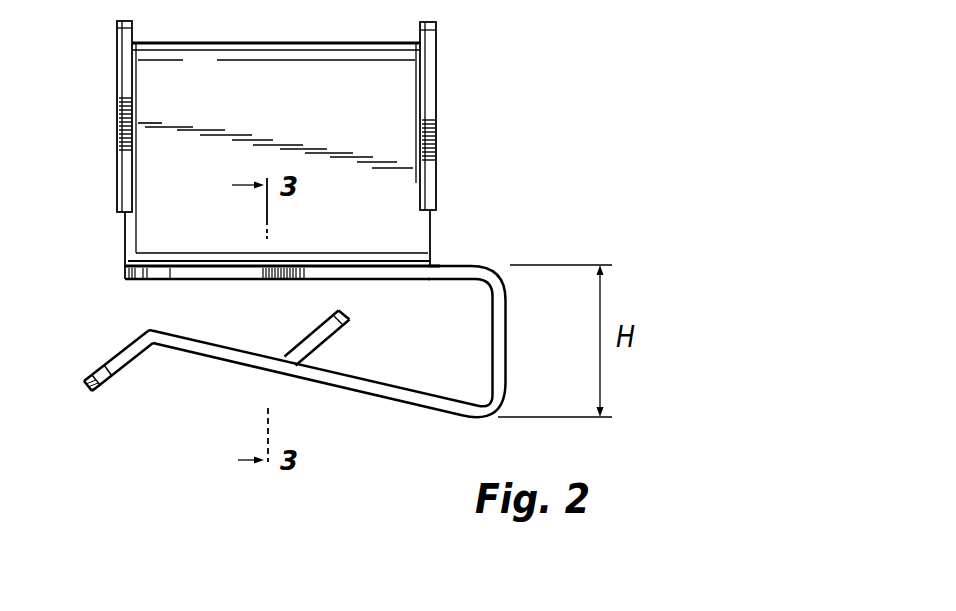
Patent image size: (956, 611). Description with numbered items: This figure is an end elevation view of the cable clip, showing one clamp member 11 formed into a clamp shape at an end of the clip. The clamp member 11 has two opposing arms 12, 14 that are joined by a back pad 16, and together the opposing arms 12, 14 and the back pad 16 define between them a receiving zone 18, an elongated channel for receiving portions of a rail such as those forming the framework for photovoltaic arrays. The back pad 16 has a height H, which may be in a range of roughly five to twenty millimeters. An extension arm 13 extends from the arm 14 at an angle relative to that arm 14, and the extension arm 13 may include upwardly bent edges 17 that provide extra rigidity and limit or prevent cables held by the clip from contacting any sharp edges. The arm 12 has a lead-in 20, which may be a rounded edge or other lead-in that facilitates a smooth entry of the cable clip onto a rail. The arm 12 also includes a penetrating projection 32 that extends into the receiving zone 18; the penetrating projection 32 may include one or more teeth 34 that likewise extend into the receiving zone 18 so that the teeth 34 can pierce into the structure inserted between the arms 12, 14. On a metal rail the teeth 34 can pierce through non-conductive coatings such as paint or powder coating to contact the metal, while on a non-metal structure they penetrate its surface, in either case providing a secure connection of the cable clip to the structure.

The clamp member 11 is at (291, 139).
The arm 12 is at (198, 360).
The extension arm 13 is at (265, 92).
The arm 14 is at (228, 262).
The back pad 16 is at (506, 345).
The upwardly bent edge 17 is at (122, 78).
The receiving zone 18 is at (309, 317).
The lead-in 20 is at (104, 363).
The penetrating projection 32 is at (334, 330).
The tooth 34 is at (352, 315).